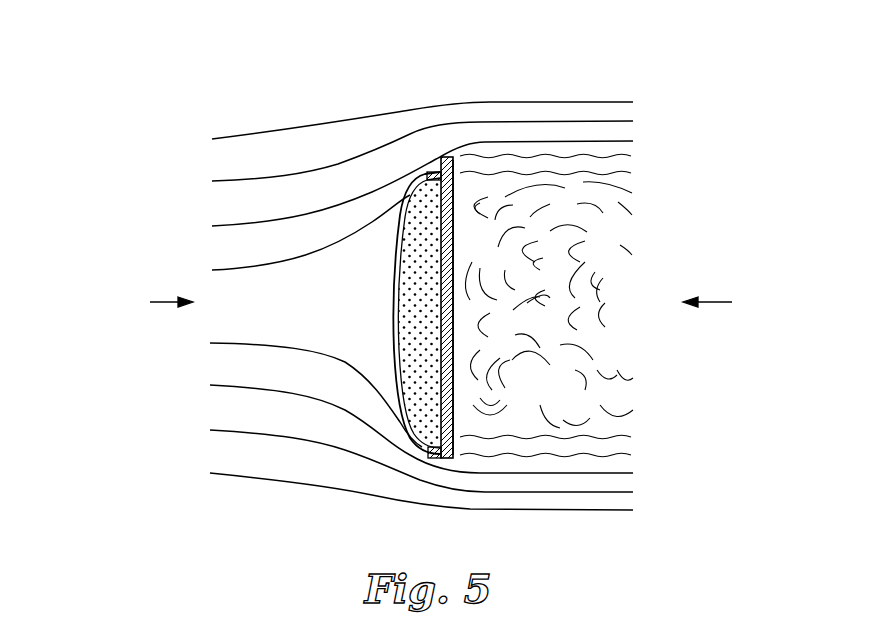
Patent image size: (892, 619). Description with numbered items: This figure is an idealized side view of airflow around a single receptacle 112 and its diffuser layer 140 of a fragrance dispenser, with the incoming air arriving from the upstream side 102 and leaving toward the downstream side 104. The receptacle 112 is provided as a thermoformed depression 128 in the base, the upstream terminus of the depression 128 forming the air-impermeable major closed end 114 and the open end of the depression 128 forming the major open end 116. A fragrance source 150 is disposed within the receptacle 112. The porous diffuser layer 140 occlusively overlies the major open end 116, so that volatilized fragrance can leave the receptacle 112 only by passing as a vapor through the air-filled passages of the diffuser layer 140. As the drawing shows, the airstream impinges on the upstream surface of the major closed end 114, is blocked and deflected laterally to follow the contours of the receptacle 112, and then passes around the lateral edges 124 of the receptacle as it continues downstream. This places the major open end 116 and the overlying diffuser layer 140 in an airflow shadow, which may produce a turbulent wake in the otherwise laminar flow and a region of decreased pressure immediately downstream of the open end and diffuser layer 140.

The upstream side 102 is at (146, 303).
The downstream side 104 is at (731, 303).
The receptacle 112 is at (416, 214).
The major closed end 114 is at (397, 283).
The major open end 116 is at (455, 443).
The lateral edges 124 is at (452, 456).
The thermoformed depression 128 is at (399, 333).
The diffuser layer 140 is at (454, 263).
The fragrance source 150 is at (428, 173).